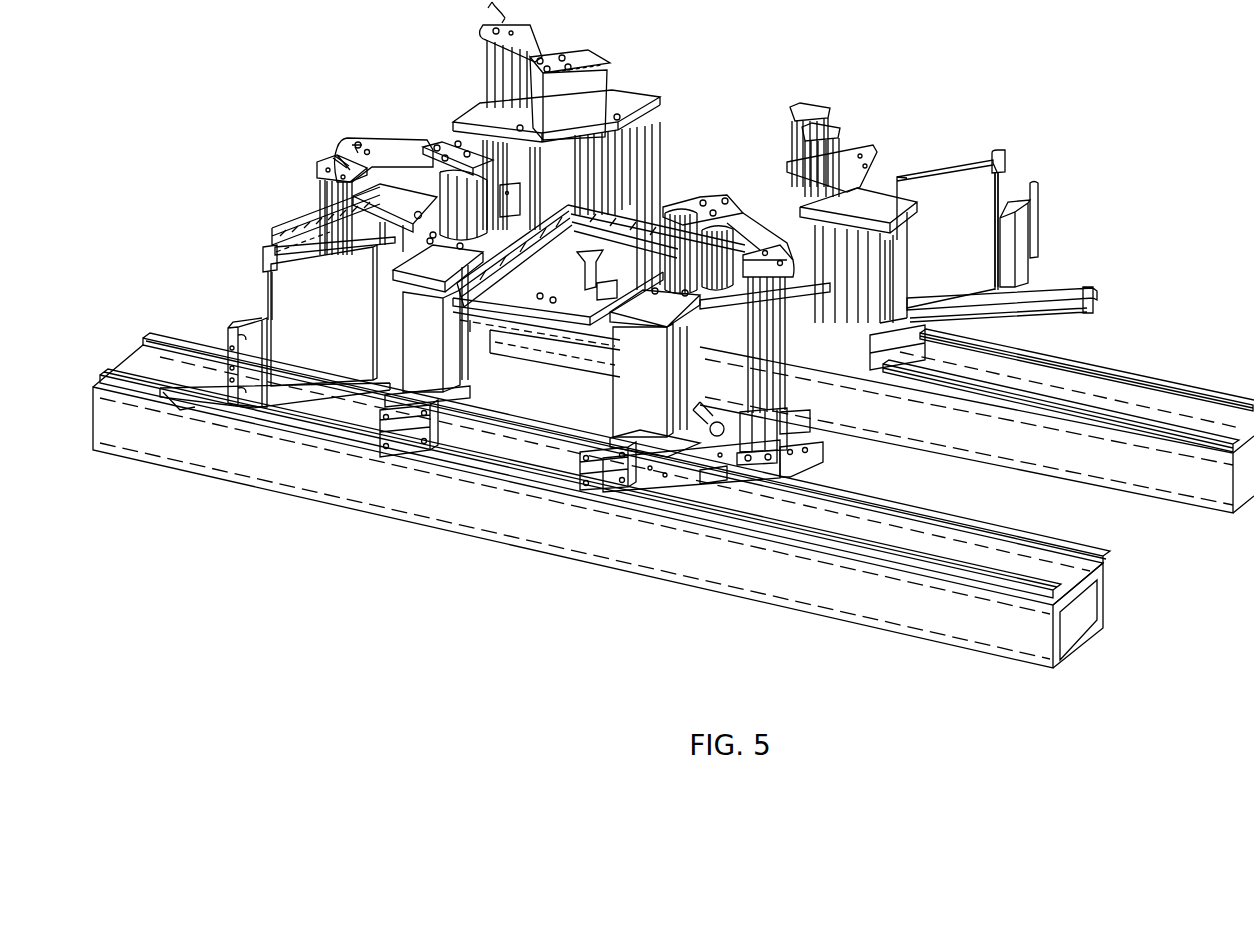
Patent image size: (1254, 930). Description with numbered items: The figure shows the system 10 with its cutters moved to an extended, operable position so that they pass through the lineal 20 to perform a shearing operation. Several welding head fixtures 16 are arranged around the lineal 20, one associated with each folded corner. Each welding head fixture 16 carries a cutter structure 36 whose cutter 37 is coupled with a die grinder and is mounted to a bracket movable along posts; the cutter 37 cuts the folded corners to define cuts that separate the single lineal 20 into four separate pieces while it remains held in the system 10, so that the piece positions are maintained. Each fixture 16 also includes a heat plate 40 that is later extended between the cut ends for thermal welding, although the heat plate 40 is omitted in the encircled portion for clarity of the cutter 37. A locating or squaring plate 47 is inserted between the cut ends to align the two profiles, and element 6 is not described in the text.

The system 10 is at (325, 143).
The welding head fixture 16 is at (622, 78).
The lineal 20 is at (535, 368).
The cutter structure 36 is at (777, 452).
The cutter 37 is at (712, 434).
The heat plate 40 is at (302, 343).
The plate 47 is at (390, 358).
The guide rail 6 is at (742, 508).